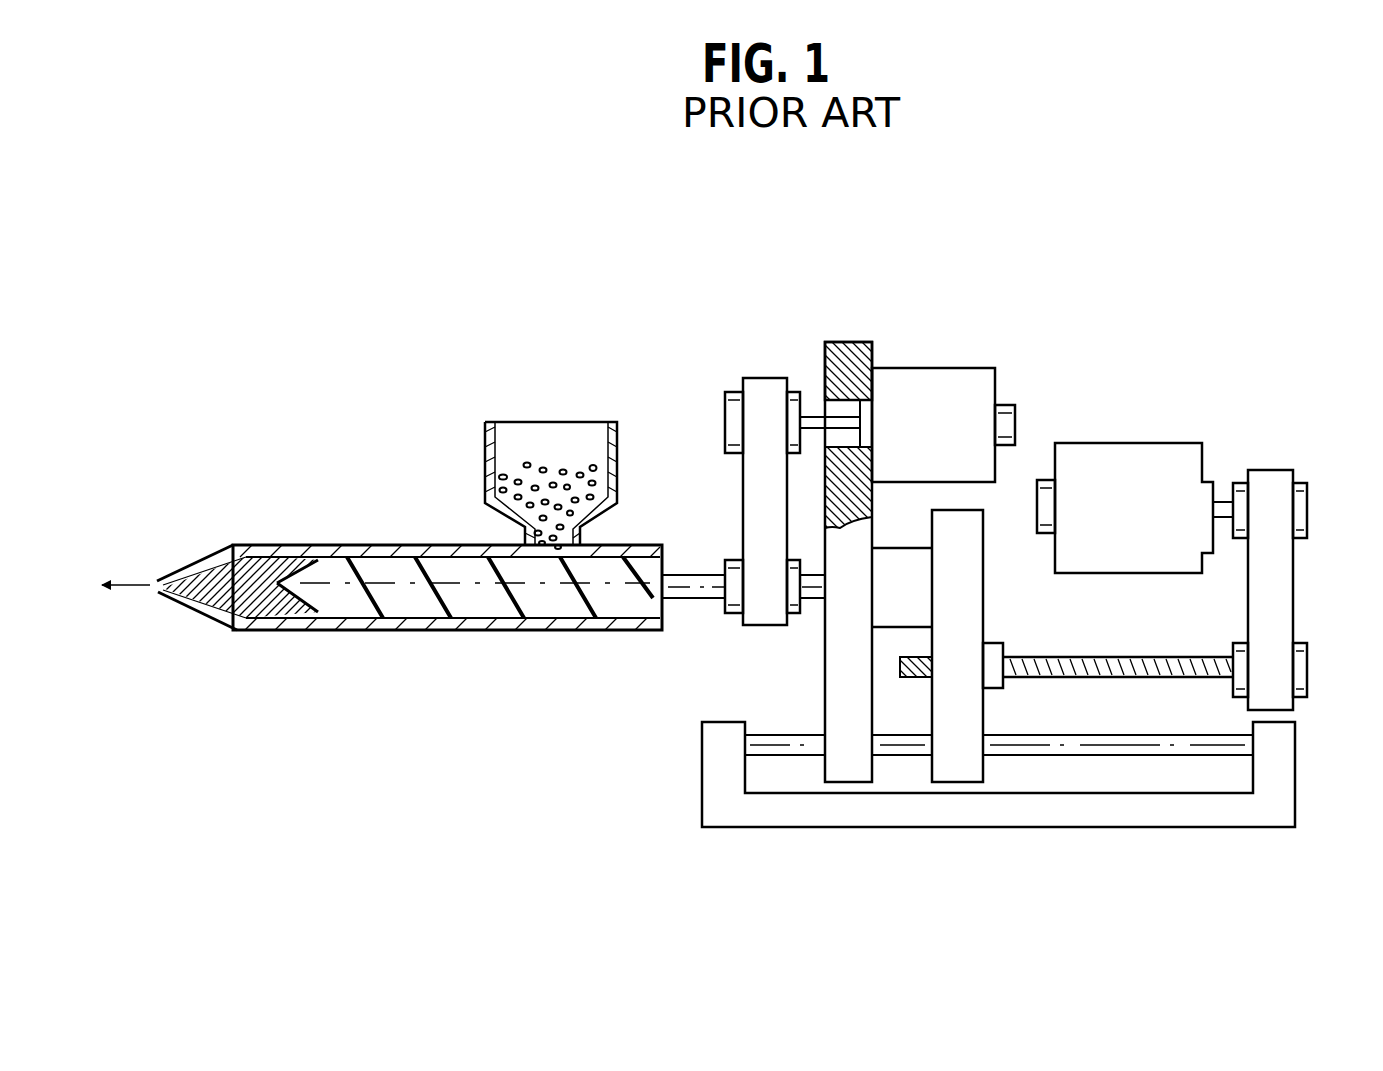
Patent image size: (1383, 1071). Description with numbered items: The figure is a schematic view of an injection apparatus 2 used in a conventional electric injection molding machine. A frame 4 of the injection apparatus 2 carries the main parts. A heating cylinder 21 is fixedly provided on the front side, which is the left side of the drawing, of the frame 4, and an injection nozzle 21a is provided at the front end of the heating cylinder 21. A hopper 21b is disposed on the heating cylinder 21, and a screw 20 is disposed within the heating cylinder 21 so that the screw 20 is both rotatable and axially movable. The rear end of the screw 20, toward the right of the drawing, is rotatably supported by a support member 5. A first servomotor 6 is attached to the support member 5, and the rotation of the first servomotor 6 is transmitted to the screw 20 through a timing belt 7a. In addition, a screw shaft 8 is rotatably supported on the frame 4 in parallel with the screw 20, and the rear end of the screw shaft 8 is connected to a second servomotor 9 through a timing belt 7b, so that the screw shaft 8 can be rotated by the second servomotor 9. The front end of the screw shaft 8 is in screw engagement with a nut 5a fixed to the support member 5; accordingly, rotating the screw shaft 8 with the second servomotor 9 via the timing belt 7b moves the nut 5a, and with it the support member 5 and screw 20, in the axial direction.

The injection apparatus 2 is at (767, 340).
The frame 4 is at (786, 813).
The support member 5 is at (892, 595).
The nut 5a is at (1003, 650).
The first servomotor 6 is at (948, 380).
The timing belt 7a is at (752, 497).
The timing belt 7b is at (1282, 586).
The screw shaft 8 is at (1102, 680).
The second servomotor 9 is at (1127, 456).
The screw 20 is at (414, 598).
The heating cylinder 21 is at (375, 545).
The injection nozzle 21a is at (187, 566).
The hopper 21b is at (618, 440).